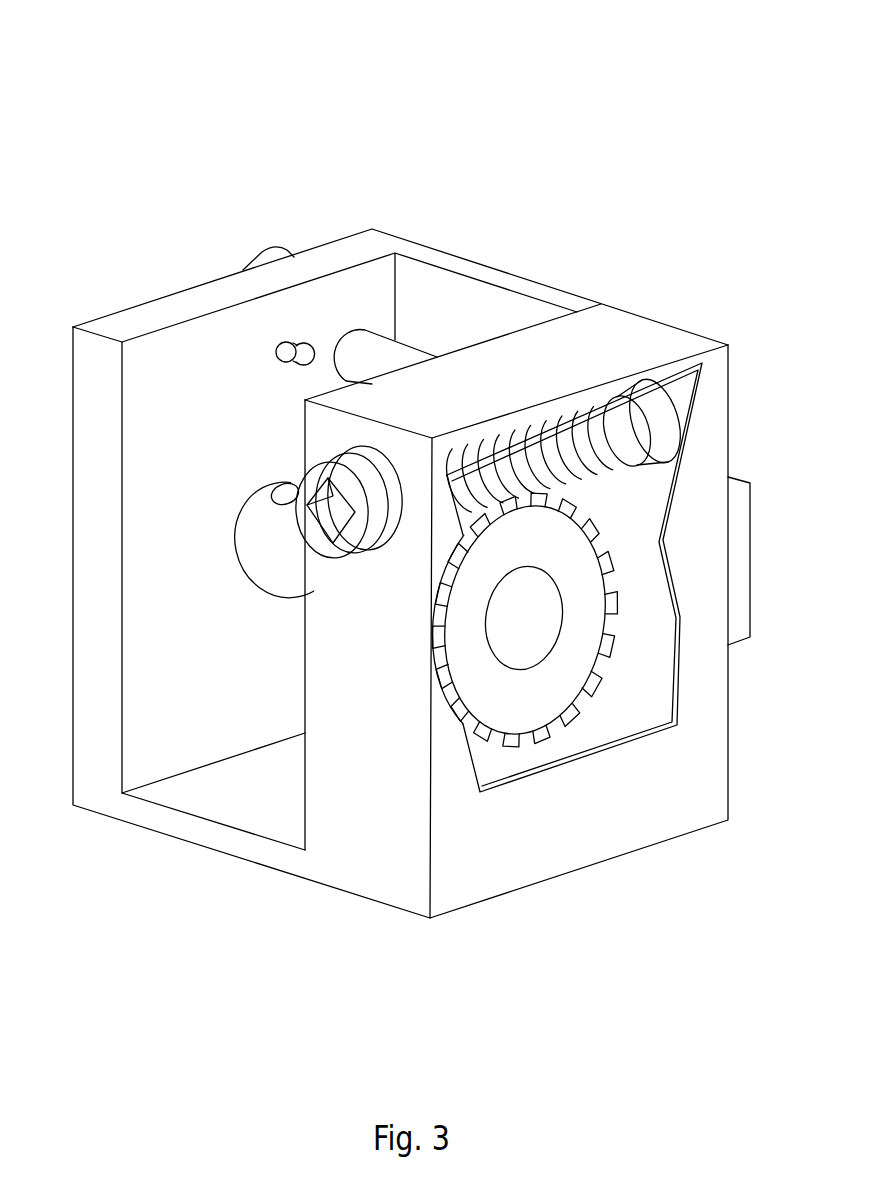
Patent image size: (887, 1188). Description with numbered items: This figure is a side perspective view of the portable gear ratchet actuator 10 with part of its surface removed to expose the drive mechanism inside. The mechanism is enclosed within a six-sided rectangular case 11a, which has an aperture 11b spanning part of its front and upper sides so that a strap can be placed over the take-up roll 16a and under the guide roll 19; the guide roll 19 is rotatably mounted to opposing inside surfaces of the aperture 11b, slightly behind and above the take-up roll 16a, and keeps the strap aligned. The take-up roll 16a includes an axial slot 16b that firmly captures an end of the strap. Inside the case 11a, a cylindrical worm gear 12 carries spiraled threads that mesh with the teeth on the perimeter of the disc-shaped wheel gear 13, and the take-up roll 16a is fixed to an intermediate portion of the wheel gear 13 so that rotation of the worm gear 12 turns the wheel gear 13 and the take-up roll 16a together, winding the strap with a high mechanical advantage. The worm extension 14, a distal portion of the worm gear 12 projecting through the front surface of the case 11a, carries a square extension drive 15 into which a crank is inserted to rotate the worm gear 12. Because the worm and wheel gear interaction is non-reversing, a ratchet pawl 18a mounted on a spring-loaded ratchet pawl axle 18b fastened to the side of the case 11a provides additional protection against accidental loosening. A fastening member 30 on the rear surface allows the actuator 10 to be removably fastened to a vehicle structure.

The portable gear ratchet actuator 10 is at (68, 90).
The case 11a is at (447, 873).
The aperture 11b is at (303, 813).
The worm gear 12 is at (540, 445).
The wheel gear 13 is at (507, 713).
The worm extension 14 is at (380, 558).
The extension drive 15 is at (328, 509).
The take-up roll 16a is at (272, 533).
The axial slot 16b is at (282, 485).
The ratchet pawl 18a is at (275, 247).
The ratchet pawl axle 18b is at (280, 342).
The guide roll 19 is at (393, 358).
The fastening member 30 is at (742, 538).